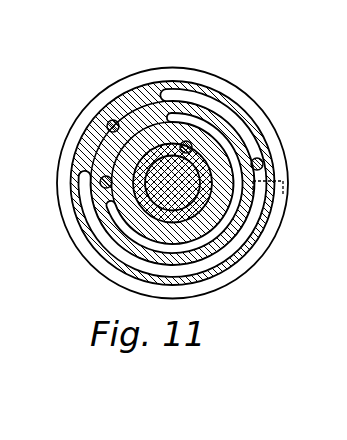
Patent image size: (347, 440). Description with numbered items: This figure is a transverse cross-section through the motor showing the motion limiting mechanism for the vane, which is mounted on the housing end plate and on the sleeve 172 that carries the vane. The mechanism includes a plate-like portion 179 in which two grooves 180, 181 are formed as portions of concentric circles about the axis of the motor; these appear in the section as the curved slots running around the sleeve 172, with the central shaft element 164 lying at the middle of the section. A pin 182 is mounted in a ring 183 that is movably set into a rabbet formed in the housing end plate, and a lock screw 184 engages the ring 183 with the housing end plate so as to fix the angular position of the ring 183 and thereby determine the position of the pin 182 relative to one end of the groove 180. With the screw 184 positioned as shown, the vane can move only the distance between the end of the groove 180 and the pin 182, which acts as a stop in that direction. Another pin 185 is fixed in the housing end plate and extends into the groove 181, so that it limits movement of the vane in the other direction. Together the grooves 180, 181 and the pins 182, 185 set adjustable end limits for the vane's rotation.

The central shaft 164 is at (153, 204).
The sleeve 172 is at (173, 217).
The plate-like portion 179 is at (178, 88).
The groove 180 is at (105, 232).
The groove 181 is at (127, 229).
The pin 182 is at (263, 160).
The ring 183 is at (240, 93).
The lock screw 184 is at (253, 192).
The pin 185 is at (100, 184).